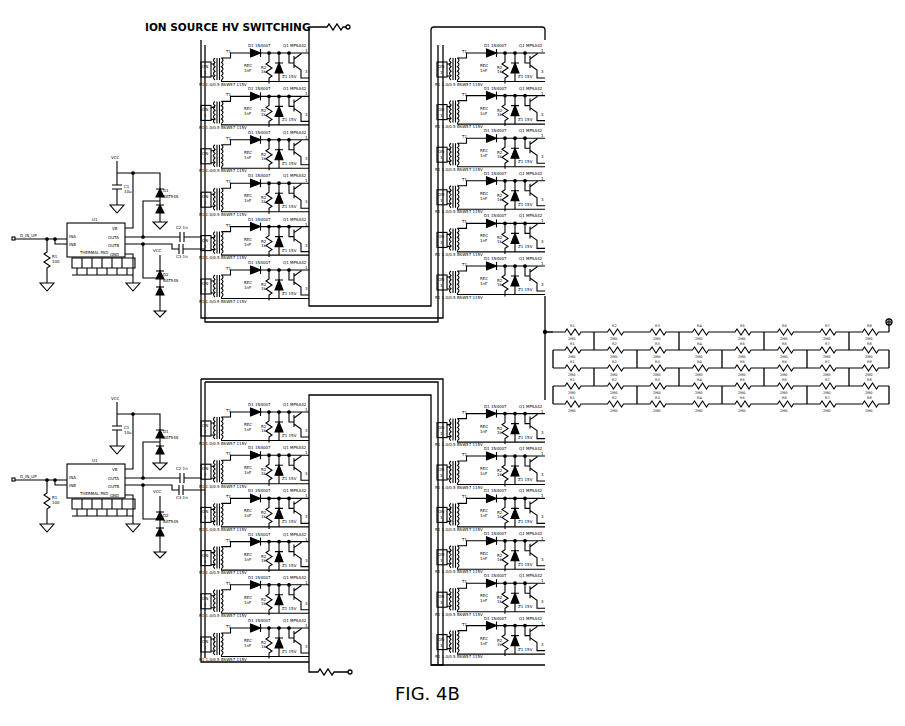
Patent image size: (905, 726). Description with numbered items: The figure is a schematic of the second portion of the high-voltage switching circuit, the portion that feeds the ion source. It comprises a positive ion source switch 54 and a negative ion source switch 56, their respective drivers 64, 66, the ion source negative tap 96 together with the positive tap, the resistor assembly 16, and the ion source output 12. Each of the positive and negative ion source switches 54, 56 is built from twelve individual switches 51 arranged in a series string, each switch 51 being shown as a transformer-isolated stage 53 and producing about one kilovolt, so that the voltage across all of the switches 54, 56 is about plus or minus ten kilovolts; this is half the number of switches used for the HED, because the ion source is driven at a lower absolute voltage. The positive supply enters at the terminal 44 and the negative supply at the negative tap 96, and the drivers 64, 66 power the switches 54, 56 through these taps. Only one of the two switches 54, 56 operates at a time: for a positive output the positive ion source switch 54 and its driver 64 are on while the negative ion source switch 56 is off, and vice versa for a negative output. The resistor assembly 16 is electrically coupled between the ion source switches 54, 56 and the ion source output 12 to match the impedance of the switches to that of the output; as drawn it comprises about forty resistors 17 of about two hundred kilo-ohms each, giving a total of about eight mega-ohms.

The driver 64 is at (83, 188).
The driver 66 is at (73, 433).
The transformer-isolated switching stage 53 is at (321, 350).
The switch 51 is at (320, 66).
The positive high voltage input 44 is at (341, 25).
The ion source negative tap 96 is at (330, 670).
The positive ion source switch 54 is at (561, 297).
The negative ion source switch 56 is at (560, 413).
The resistor 17 is at (563, 348).
The resistor assembly 16 is at (888, 420).
The ion source output 12 is at (877, 310).